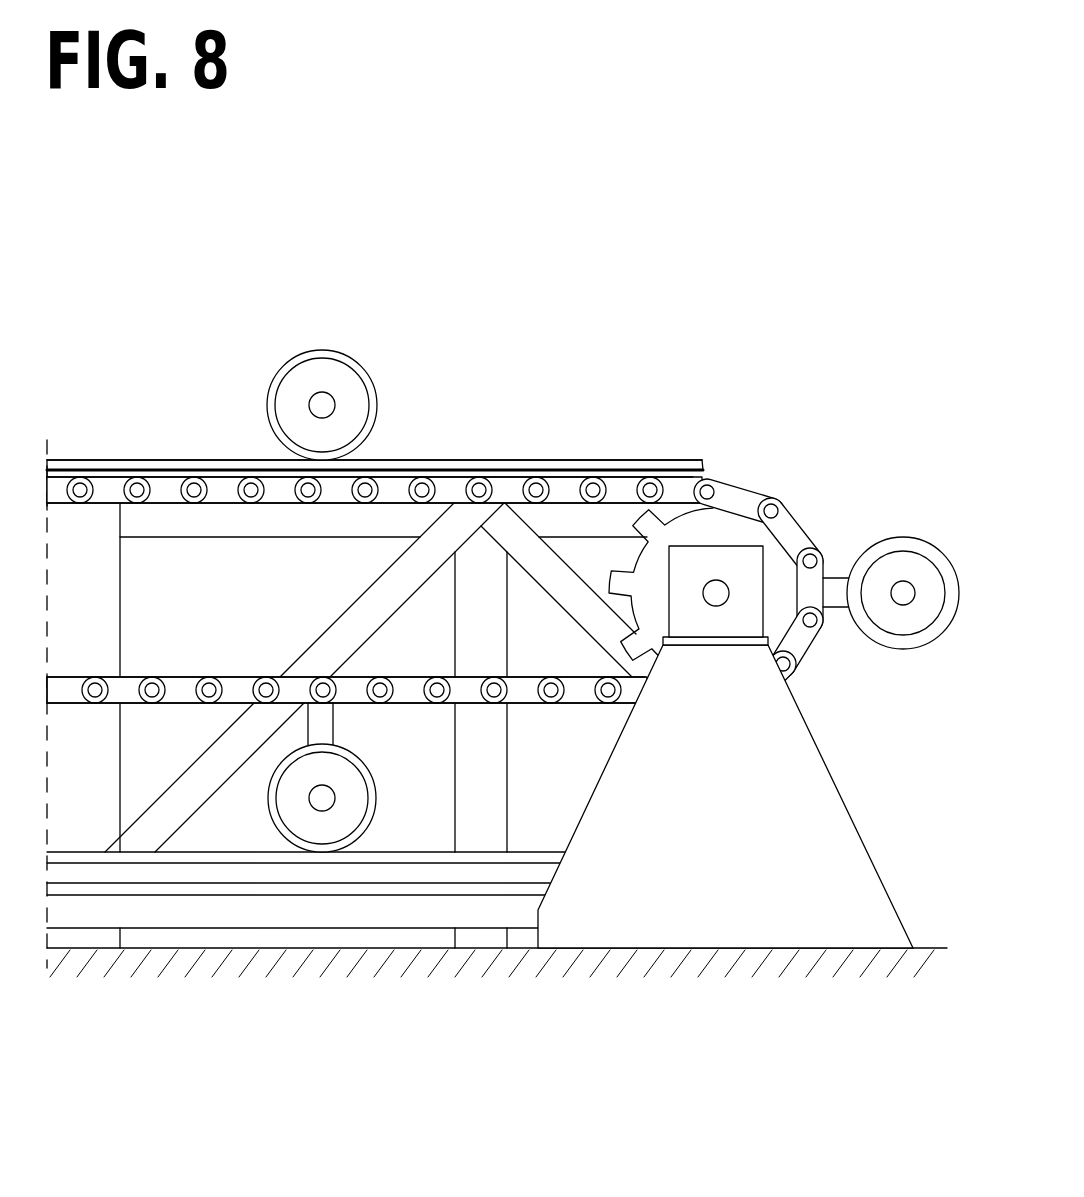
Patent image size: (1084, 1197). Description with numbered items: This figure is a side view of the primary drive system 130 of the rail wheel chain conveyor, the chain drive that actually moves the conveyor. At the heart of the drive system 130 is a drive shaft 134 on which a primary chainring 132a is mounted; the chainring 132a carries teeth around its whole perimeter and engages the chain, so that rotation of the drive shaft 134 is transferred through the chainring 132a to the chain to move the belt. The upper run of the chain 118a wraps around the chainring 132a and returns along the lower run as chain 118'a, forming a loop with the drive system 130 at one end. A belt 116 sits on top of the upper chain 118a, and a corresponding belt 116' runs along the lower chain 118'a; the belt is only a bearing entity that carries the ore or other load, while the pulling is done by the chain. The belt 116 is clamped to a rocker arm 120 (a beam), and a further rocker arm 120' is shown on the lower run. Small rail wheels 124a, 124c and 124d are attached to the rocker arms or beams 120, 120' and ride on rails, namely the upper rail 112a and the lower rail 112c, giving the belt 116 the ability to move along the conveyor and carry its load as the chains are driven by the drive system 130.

The primary drive system 130 is at (772, 253).
The rail wheel 124a is at (355, 367).
The rail wheel 124c is at (939, 546).
The rail wheel 124d is at (365, 832).
The rocker arm 120 is at (374, 425).
The rocker arm 120' is at (383, 739).
The rail 112a is at (452, 458).
The rail 112c is at (252, 862).
The belt 116 is at (402, 427).
The belt 116' is at (352, 777).
The chain 118a is at (575, 482).
The chain 118'a is at (397, 747).
The primary chainring 132a is at (692, 500).
The drive shaft 134 is at (720, 577).